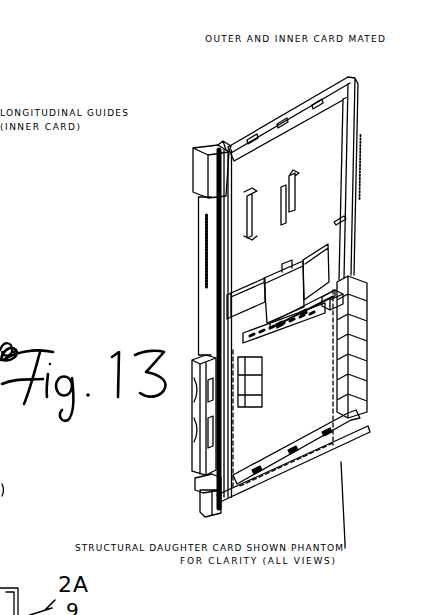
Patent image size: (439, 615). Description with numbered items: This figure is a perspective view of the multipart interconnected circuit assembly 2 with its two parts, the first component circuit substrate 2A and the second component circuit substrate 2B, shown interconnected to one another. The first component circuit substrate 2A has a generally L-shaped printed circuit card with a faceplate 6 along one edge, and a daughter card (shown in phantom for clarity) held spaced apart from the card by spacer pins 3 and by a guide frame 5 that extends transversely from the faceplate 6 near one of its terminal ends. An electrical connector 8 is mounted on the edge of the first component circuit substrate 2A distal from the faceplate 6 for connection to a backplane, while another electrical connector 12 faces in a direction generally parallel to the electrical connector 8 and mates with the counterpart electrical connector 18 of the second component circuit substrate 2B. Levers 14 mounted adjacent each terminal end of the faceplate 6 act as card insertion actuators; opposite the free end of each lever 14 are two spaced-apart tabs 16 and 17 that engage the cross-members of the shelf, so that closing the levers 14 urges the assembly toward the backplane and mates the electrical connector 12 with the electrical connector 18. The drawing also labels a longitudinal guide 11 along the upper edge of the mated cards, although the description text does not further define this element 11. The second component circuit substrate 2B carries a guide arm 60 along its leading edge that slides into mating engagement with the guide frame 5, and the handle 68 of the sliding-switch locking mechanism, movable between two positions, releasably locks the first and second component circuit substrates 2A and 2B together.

The multipart interconnected circuit assembly 2 is at (205, 112).
The first component circuit substrate 2A is at (318, 150).
The second component circuit substrate 2B is at (10, 230).
The spacer pins 3 is at (345, 276).
The guide frame 5 is at (358, 455).
The faceplate 6 is at (199, 297).
The electrical connector 8 is at (360, 160).
The top longitudinal guide 11 is at (263, 121).
The electrical connector 12 is at (332, 463).
The levers 14 is at (203, 170).
The tab 16 is at (226, 148).
The tab 17 is at (207, 146).
The electrical connector 18 is at (268, 372).
The guide arm 60 is at (257, 393).
The handle 68 is at (196, 445).